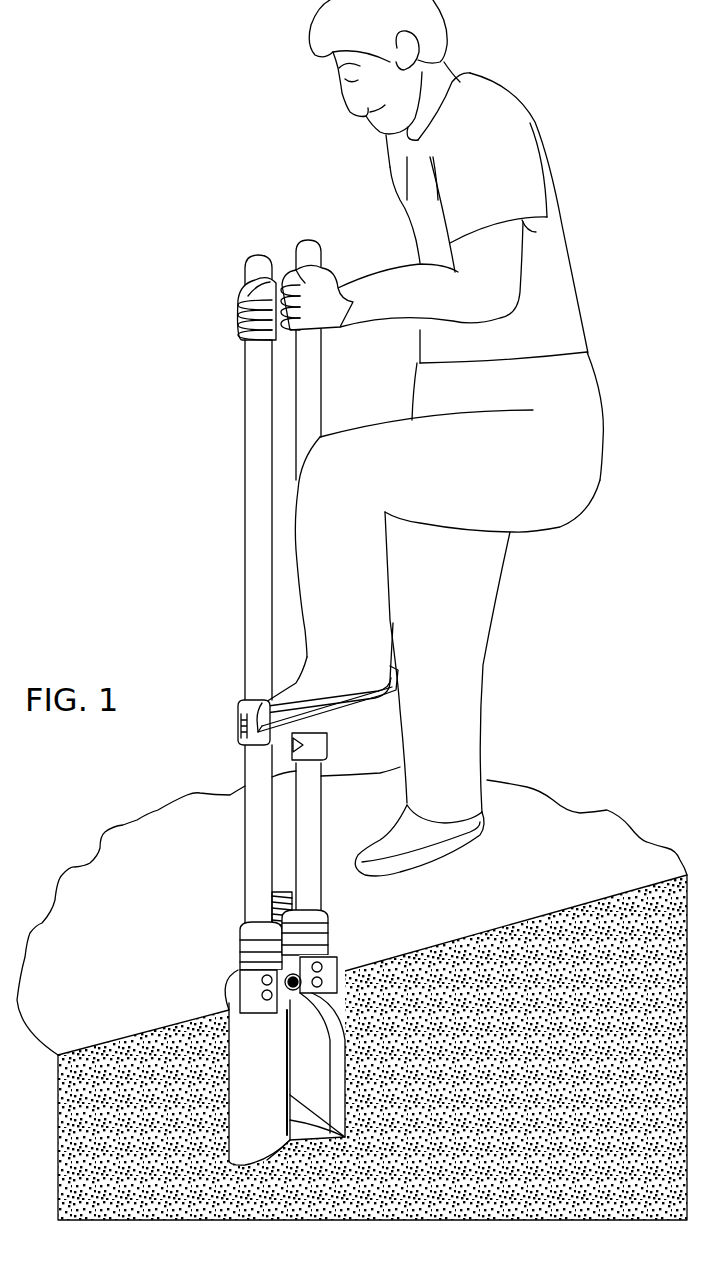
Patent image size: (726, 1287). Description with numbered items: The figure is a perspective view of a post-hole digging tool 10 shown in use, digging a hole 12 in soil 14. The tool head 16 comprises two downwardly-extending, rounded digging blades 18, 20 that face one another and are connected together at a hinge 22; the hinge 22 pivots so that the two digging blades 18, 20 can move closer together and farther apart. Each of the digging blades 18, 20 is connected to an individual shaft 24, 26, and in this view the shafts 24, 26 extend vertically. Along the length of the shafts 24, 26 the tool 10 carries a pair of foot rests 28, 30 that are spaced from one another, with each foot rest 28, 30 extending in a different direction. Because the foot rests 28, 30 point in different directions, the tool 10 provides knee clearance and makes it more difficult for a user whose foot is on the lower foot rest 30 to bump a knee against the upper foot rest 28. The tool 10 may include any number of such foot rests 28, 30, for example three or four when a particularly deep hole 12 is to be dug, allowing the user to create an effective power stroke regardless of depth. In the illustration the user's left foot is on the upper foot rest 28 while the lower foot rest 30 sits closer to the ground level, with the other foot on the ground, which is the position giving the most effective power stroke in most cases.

The post-hole digging tool 10 is at (237, 714).
The hole 12 is at (332, 977).
The soil 14 is at (146, 1067).
The tool head 16 is at (220, 1090).
The digging blade 18 is at (243, 1115).
The digging blade 20 is at (345, 1053).
The hinge 22 is at (293, 995).
The shaft 24 is at (258, 575).
The shaft 26 is at (312, 388).
The upper foot rest 28 is at (240, 718).
The lower foot rest 30 is at (240, 952).